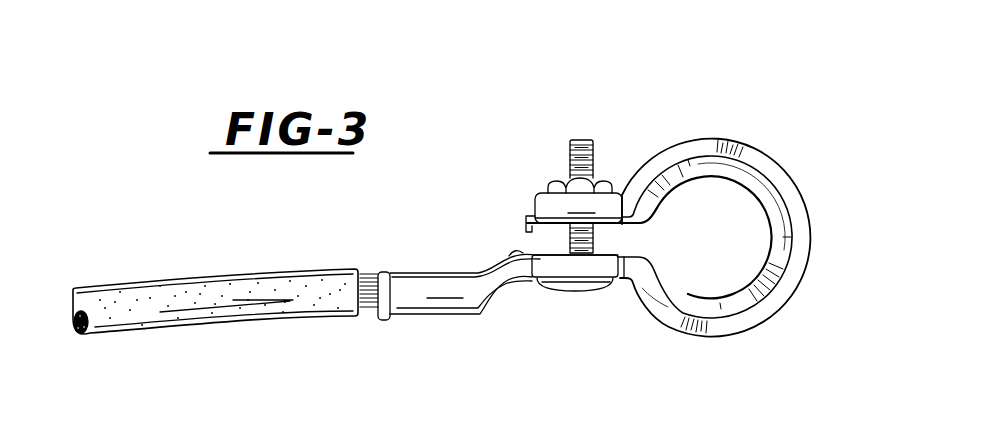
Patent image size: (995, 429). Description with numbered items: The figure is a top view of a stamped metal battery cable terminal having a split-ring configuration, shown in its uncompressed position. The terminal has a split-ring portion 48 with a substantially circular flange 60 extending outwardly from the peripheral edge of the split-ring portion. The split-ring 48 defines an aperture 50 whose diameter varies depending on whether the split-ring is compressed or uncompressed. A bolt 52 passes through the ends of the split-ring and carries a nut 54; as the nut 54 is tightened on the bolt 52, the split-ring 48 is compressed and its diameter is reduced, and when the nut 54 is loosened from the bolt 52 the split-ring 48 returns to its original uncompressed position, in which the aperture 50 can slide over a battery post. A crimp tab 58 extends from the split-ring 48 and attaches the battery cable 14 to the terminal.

The battery cable 14 is at (250, 304).
The split-ring portion 48 is at (690, 295).
The split-ring aperture 50 is at (746, 262).
The bolt 52 is at (593, 161).
The nut 54 is at (556, 187).
The crimp tab 58 is at (423, 313).
The circular flange 60 is at (777, 172).